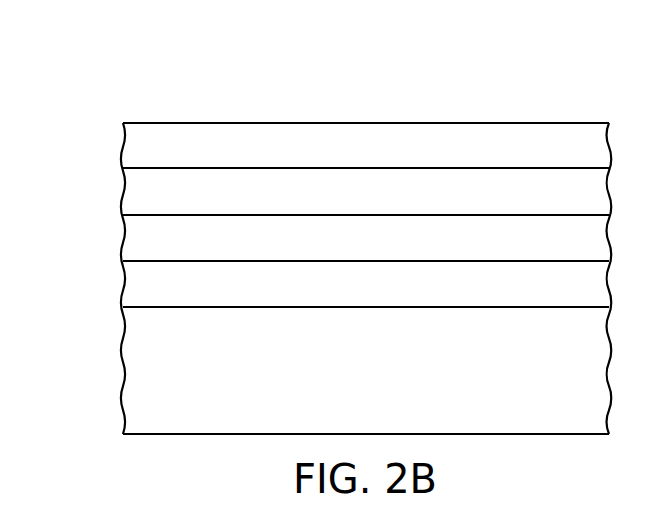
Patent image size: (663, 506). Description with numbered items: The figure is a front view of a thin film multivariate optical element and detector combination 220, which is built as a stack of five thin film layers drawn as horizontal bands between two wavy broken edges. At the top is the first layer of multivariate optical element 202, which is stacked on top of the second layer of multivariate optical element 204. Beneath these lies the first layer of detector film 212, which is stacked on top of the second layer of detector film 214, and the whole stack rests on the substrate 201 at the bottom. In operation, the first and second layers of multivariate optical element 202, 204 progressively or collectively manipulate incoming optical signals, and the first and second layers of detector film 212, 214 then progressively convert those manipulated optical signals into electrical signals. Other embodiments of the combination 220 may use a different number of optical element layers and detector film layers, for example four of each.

The thin film multivariate optical element and detector combination 220 is at (329, 227).
The first layer of multivariate optical element 202 is at (130, 143).
The second layer of multivariate optical element 204 is at (130, 190).
The first layer of detector film 212 is at (130, 233).
The second layer of detector film 214 is at (130, 285).
The substrate 201 is at (130, 372).